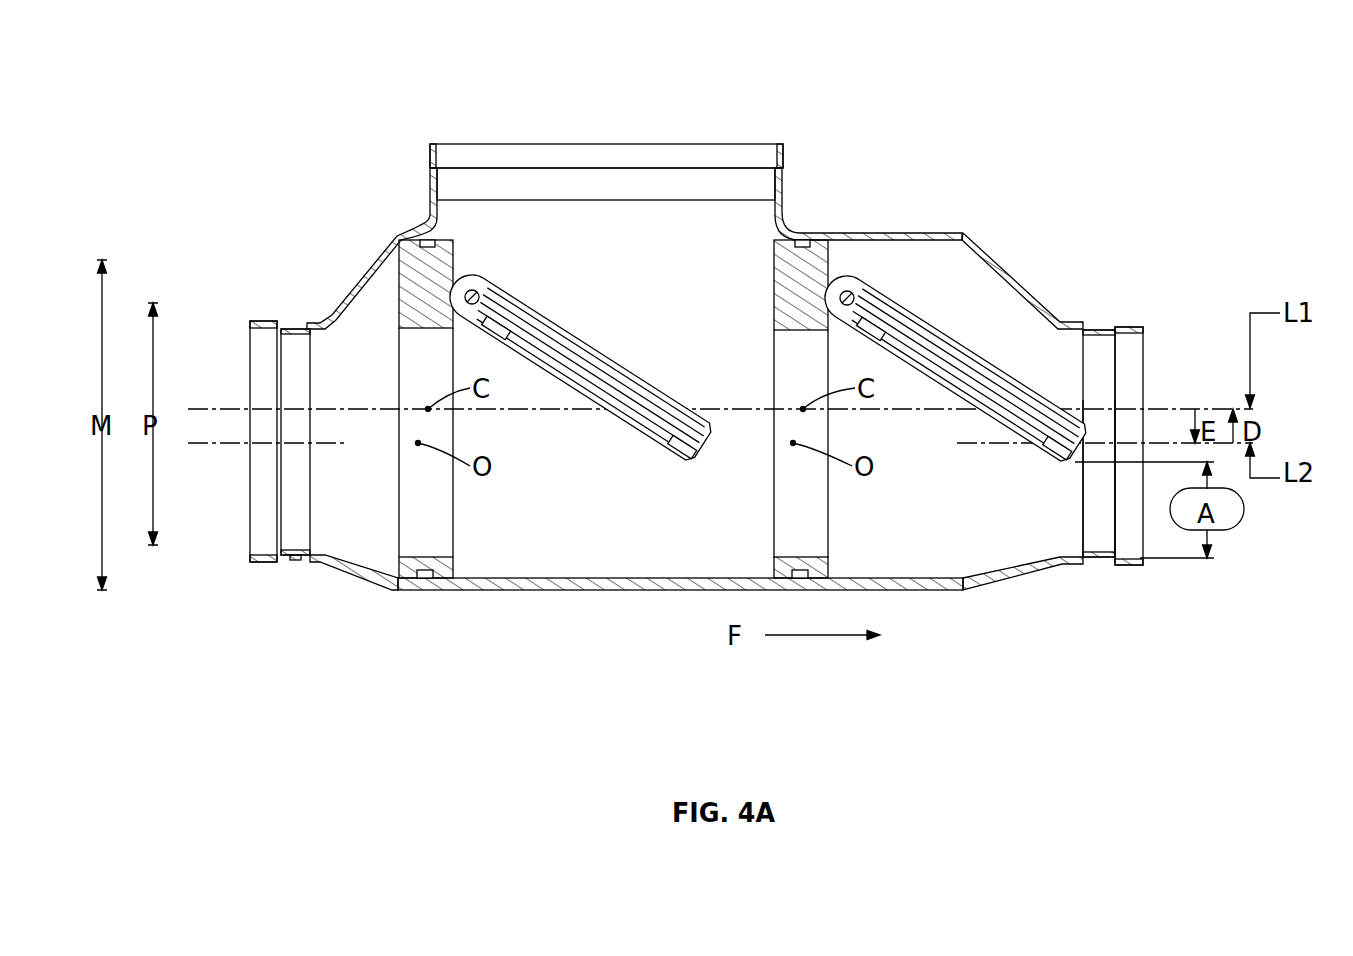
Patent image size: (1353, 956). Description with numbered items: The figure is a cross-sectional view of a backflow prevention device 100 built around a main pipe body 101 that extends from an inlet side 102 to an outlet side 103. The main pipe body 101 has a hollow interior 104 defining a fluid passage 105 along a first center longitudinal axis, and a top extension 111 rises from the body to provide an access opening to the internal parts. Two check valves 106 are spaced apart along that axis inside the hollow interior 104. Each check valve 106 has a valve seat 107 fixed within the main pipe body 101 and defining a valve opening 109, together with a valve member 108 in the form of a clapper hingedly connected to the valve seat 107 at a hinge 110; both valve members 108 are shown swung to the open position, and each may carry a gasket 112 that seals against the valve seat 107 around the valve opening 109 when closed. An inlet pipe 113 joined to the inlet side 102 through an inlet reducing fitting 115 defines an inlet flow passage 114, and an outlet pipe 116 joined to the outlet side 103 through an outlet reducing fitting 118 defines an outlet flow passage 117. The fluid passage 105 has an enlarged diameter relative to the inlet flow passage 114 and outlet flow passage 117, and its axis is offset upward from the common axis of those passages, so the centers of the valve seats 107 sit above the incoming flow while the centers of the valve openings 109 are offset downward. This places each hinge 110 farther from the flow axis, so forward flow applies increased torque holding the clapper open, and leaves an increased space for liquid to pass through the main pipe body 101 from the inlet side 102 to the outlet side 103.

The backflow prevention device 100 is at (424, 76).
The main pipe body 101 is at (934, 226).
The inlet side 102 is at (320, 326).
The outlet side 103 is at (1075, 323).
The hollow interior 104 is at (994, 286).
The fluid passage 105 is at (997, 557).
The check valve 106 is at (440, 253).
The valve seat 107 is at (392, 237).
The valve member 108 is at (583, 357).
The valve opening 109 is at (426, 538).
The hinge 110 is at (479, 293).
The top extension 111 is at (784, 162).
The gasket 112 is at (680, 459).
The inlet pipe 113 is at (271, 316).
The inlet flow passage 114 is at (286, 376).
The inlet reducing fitting 115 is at (293, 561).
The outlet pipe 116 is at (1137, 318).
The outlet flow passage 117 is at (1106, 544).
The outlet reducing fitting 118 is at (1103, 566).